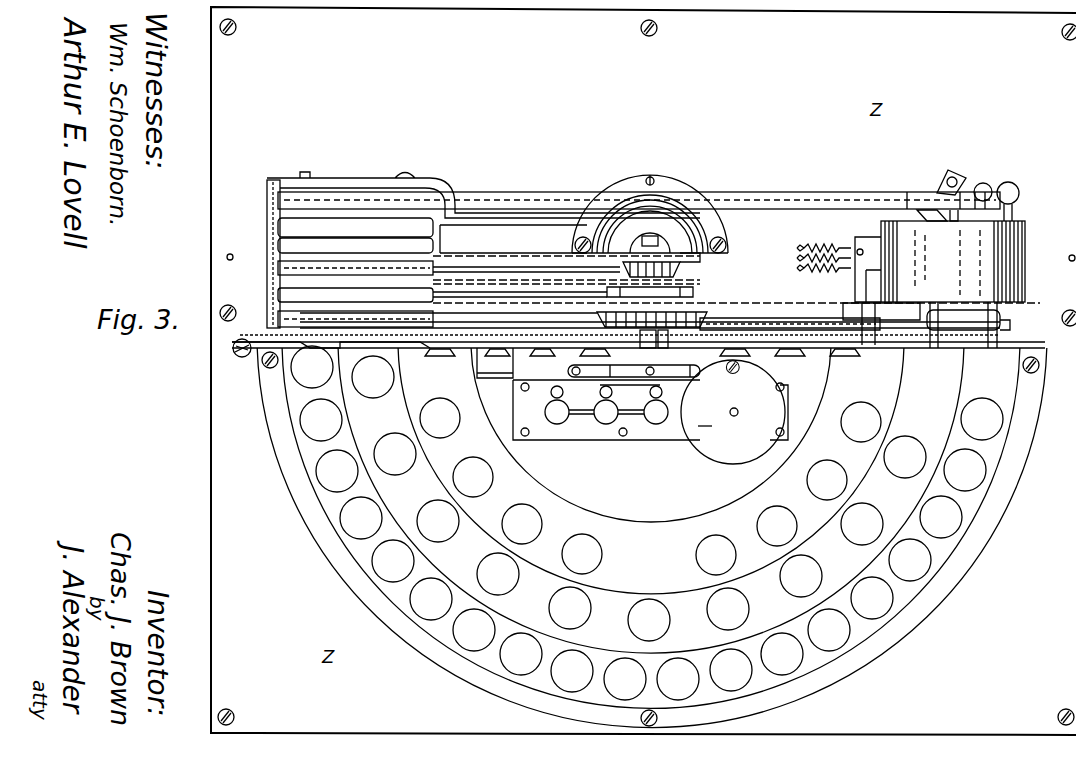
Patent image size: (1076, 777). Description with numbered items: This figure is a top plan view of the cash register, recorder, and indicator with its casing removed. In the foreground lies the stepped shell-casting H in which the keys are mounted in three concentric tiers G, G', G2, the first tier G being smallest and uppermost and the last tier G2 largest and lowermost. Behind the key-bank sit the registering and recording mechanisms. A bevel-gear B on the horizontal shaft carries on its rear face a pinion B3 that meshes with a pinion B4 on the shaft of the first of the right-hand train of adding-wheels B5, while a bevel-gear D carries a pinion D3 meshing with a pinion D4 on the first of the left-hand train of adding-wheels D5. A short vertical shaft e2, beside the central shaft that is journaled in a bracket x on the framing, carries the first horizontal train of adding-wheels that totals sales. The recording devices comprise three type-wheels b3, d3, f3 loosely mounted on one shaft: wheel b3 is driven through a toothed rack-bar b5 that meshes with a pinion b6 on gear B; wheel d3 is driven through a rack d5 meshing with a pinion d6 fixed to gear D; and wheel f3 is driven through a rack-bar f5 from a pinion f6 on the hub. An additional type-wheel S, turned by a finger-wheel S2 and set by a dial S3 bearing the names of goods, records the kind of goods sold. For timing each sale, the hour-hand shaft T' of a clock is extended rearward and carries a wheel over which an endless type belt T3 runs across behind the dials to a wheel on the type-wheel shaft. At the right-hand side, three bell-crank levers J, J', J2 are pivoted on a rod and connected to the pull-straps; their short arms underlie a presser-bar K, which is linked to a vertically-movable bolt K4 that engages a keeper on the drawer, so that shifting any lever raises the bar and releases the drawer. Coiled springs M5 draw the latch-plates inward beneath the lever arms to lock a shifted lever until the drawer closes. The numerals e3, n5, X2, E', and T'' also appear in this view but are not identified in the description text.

The shell-casting H is at (652, 537).
The key tier G is at (648, 469).
The key tier G' is at (639, 516).
The key tier G2 is at (380, 559).
The pinion B4 is at (650, 412).
The short vertical shaft e2 is at (738, 413).
The arm e3 is at (695, 426).
The bracket x is at (627, 375).
The pinion D4 is at (568, 368).
The train of adding-wheels D5 is at (495, 363).
The lever n5 is at (476, 340).
The pinion B3 is at (620, 340).
The pinion D3 is at (642, 340).
The bevel-gear B is at (662, 340).
The housing X2 is at (590, 226).
The endless belt T3 is at (278, 200).
The letter bar E' is at (334, 225).
The type-wheel b3 is at (278, 247).
The type-wheel f3 is at (278, 268).
The type-wheel d3 is at (278, 292).
The type-wheel S is at (278, 320).
The dial S3 is at (611, 342).
The finger-wheel S2 is at (260, 350).
The toothed rack-bar b5 is at (512, 236).
The rack-bar f5 is at (512, 266).
The rack d5 is at (508, 290).
The pinion f6 is at (630, 272).
The pinion b6 is at (692, 268).
The pinion d6 is at (700, 292).
The bevel-gear D is at (708, 318).
The train of adding-wheels B5 is at (776, 350).
The hour-hand shaft T' is at (953, 261).
The lug T'' is at (938, 228).
The vertically-movable bolt K4 is at (1020, 190).
The presser-bar K is at (868, 269).
The coiled springs M5 is at (824, 249).
The bell-crank lever J is at (881, 324).
The bell-crank lever J' is at (963, 325).
The bell-crank lever J2 is at (1000, 325).